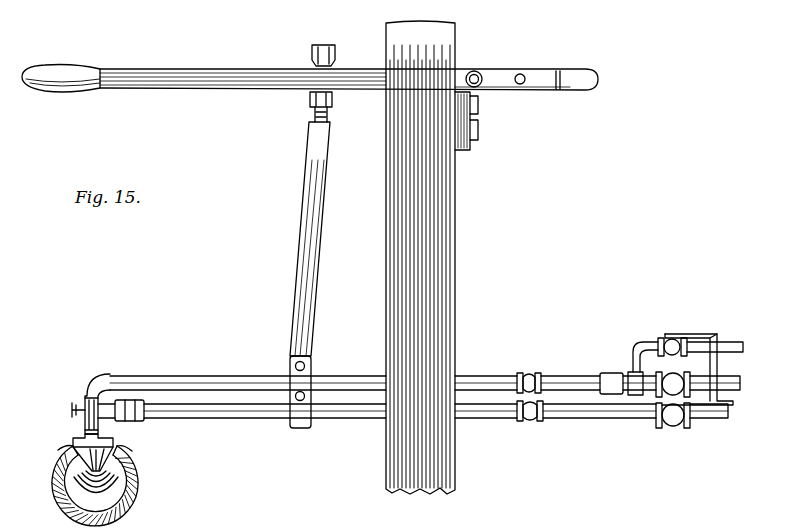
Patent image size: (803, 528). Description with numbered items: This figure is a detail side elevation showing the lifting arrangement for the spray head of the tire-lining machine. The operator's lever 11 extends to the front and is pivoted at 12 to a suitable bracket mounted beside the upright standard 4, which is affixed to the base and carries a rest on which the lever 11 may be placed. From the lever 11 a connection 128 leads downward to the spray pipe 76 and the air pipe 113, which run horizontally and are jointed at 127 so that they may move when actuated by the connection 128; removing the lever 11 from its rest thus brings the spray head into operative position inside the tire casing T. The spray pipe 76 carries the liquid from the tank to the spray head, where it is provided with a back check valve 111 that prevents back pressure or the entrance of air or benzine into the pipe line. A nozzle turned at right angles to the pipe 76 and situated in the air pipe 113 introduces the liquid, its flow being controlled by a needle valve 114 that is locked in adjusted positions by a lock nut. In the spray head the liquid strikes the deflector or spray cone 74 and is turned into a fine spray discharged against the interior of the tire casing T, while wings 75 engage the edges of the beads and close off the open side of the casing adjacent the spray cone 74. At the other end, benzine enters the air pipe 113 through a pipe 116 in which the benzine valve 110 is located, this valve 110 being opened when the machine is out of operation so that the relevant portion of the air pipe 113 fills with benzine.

The standard 4 is at (443, 287).
The operator's lever 11 is at (174, 80).
The pivot 12 is at (477, 70).
The connection 128 is at (305, 207).
The air pipe 113 is at (203, 377).
The pipe connections 76 is at (231, 419).
The needle valve 114 is at (70, 410).
The back check valve 111 is at (136, 422).
The wings 75 is at (115, 447).
The deflector or spray cone 74 is at (110, 465).
The tire casing T is at (134, 507).
The joints 127 is at (532, 402).
The pipe 116 is at (633, 362).
The benzine valve 110 is at (680, 337).